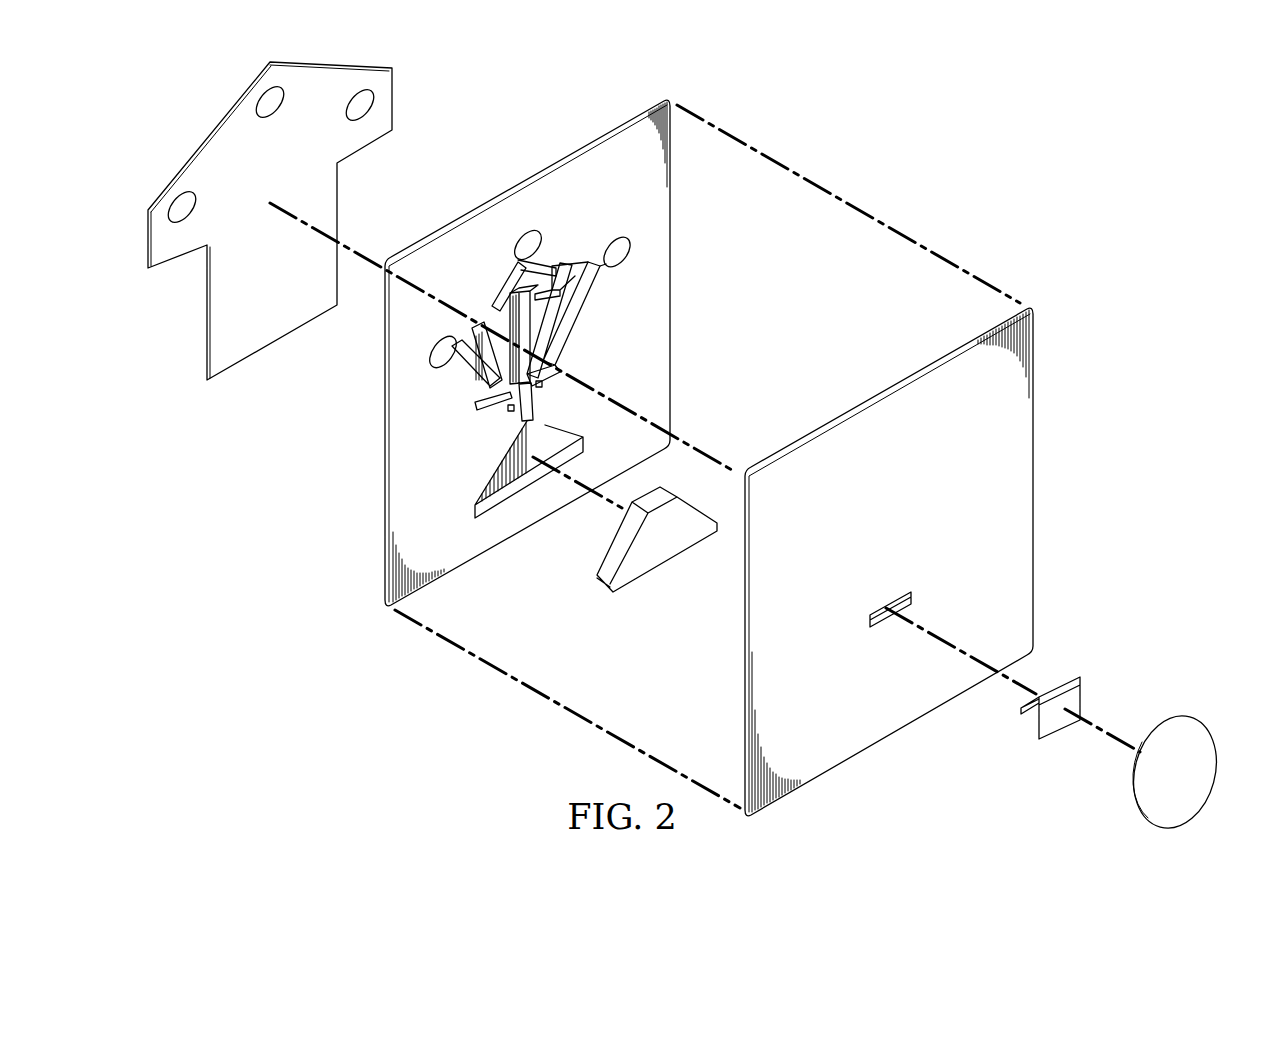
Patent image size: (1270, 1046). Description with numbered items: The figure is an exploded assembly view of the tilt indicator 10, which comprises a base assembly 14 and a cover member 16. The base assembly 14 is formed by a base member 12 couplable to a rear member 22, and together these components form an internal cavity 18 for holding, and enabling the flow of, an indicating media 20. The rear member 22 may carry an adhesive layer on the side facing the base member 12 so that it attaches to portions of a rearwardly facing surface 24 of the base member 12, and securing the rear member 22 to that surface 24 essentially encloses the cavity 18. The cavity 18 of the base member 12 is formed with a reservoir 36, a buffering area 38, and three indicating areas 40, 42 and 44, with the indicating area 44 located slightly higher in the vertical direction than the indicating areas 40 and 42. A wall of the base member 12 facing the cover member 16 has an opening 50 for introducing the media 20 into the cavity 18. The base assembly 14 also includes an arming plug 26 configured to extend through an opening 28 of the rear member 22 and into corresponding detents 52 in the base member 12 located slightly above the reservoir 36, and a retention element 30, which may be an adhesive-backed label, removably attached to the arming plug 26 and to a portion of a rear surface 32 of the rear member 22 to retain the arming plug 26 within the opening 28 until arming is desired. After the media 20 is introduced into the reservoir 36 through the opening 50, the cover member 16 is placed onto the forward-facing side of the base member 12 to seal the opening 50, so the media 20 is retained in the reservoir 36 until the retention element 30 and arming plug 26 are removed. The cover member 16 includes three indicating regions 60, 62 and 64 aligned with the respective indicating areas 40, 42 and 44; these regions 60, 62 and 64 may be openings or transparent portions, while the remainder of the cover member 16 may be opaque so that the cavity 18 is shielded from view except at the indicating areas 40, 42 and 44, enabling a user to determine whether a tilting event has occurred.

The tilt indicator 10 is at (1012, 203).
The base member 12 is at (672, 213).
The base assembly 14 is at (411, 654).
The cover member 16 is at (394, 92).
The internal cavity 18 is at (466, 381).
The indicating media 20 is at (650, 573).
The rear member 22 is at (1034, 419).
The rearwardly facing surface 24 is at (666, 392).
The arming plug 26 is at (1081, 684).
The opening 28 is at (911, 596).
The retention element 30 is at (1203, 800).
The rear surface 32 is at (1034, 600).
The reservoir 36 is at (513, 473).
The buffering area 38 is at (595, 309).
The indicating area 40 is at (445, 343).
The indicating area 42 is at (630, 252).
The indicating area 44 is at (516, 259).
The opening 50 is at (542, 420).
The detents 52 is at (548, 388).
The indicating region 60 is at (192, 209).
The indicating region 62 is at (370, 112).
The indicating region 64 is at (277, 108).